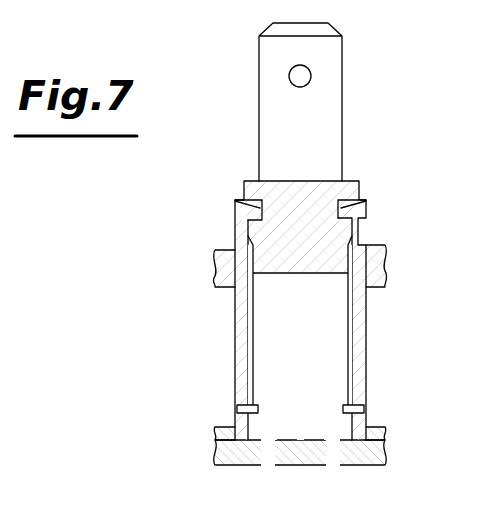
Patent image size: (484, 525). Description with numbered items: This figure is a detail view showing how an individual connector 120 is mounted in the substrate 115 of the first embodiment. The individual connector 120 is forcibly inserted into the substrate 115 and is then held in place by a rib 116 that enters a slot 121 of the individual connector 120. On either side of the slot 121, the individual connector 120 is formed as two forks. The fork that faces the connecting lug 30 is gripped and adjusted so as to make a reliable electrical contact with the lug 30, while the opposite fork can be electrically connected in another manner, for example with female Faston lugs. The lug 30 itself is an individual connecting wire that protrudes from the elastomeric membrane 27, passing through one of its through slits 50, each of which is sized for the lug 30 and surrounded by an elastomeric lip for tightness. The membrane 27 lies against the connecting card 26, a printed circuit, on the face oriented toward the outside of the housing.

The individual connector 120 is at (320, 108).
The slot 121 is at (245, 210).
The rib 116 is at (347, 212).
The substrate 115 is at (373, 267).
The connecting lug 30 is at (305, 348).
The through slit 50 is at (239, 414).
The elastomeric membrane 27 is at (221, 432).
The connecting card 26 is at (373, 453).